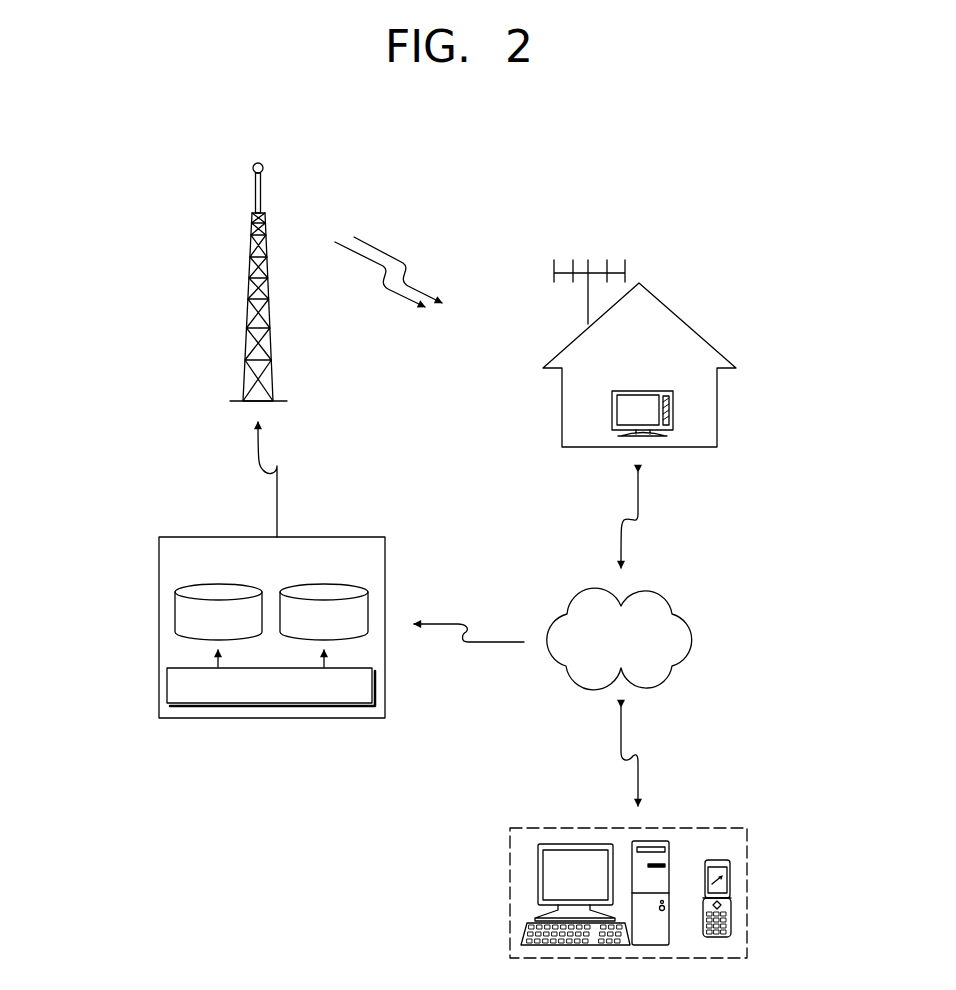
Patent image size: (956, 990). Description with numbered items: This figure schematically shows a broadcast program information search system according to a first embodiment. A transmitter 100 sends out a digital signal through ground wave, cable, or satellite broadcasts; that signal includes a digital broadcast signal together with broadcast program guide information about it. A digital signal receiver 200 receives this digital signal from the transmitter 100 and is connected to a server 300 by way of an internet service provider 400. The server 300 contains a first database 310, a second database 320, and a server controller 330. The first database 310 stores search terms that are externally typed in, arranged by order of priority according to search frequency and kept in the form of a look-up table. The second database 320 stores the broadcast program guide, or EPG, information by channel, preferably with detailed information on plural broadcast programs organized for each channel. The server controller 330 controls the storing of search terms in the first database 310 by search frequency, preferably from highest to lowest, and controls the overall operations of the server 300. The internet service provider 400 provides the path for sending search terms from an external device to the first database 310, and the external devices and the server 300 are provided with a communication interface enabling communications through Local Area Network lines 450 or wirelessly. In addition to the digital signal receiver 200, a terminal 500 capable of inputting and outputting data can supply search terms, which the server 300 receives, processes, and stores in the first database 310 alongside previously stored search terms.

The transmitter 100 is at (254, 167).
The digital signal receiver 200 is at (642, 390).
The server 300 is at (159, 564).
The first database 310 is at (175, 608).
The second database 320 is at (362, 592).
The server controller 330 is at (167, 684).
The internet service provider 400 is at (698, 638).
The Local Area Network lines 450 is at (638, 508).
The terminal 500 is at (747, 892).